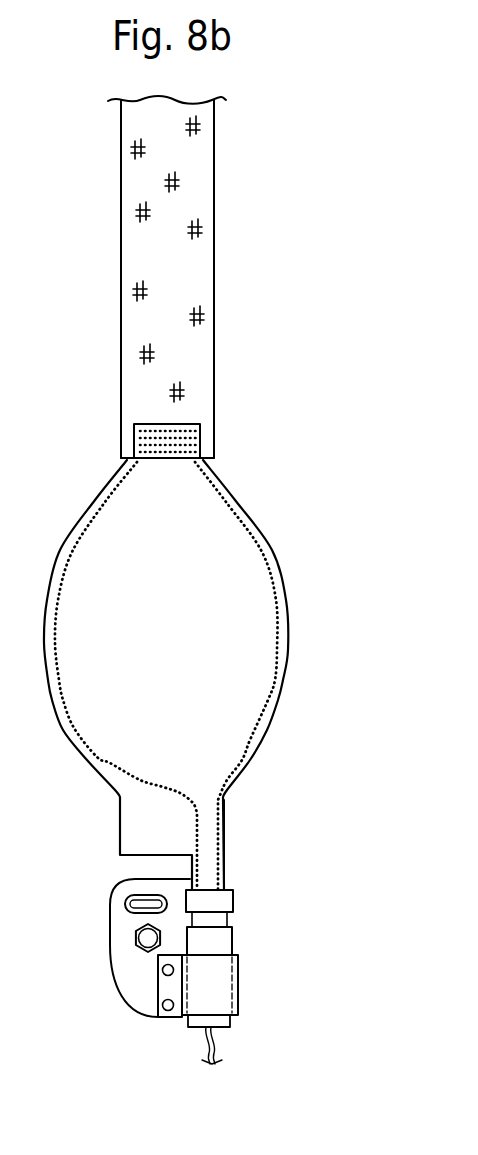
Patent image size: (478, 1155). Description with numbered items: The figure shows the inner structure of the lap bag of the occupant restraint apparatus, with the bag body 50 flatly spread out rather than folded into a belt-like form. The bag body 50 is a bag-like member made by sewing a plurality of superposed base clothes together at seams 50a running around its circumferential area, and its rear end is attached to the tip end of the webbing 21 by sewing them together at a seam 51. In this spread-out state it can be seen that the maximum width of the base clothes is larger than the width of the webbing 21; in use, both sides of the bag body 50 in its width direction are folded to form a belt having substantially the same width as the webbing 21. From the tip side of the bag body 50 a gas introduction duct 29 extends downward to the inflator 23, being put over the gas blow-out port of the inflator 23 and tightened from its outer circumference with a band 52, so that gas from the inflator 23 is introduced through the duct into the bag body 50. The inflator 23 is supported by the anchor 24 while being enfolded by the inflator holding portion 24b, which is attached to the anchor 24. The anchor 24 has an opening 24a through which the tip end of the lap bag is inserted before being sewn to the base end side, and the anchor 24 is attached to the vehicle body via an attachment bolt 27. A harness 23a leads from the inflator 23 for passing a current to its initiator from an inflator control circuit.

The webbing 21 is at (205, 252).
The seam 51 is at (190, 432).
The bag body 50 is at (290, 603).
The seams 50a is at (57, 622).
The tube 29 is at (205, 836).
The band 52 is at (220, 903).
The inflator 23 is at (220, 938).
The inflator holding portion 24b is at (222, 1003).
The harness 23a is at (195, 1043).
The anchor 24 is at (138, 980).
The opening 24a is at (135, 916).
The attachment bolt 27 is at (148, 938).